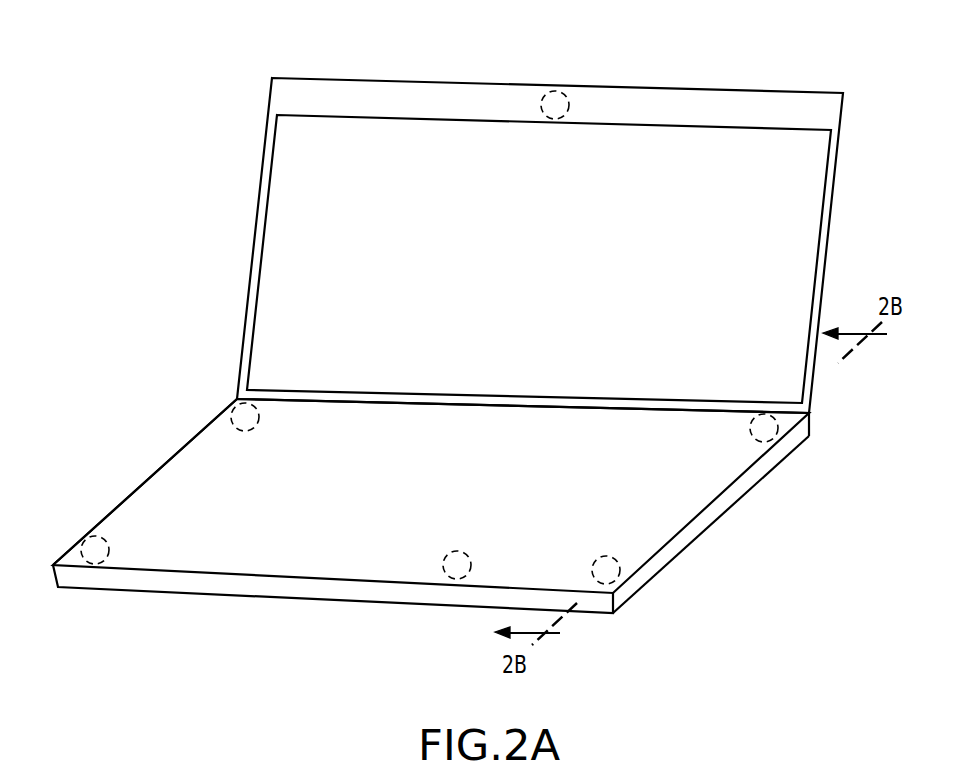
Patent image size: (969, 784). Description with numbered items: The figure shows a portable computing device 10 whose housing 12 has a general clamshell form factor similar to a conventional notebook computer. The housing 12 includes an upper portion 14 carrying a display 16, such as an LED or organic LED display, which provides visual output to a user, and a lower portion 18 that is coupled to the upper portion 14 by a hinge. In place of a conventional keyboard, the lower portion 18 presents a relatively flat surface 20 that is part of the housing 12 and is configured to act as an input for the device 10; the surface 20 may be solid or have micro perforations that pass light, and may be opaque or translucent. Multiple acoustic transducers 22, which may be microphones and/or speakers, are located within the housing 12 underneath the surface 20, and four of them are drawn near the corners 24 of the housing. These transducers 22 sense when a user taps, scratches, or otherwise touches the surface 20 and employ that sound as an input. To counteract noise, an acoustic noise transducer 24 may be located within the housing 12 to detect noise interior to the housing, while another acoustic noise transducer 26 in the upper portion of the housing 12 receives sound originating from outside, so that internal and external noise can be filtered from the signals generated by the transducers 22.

The portable computing device 10 is at (180, 82).
The housing 12 is at (147, 486).
The upper portion 14 is at (832, 155).
The display 16 is at (812, 247).
The lower portion 18 is at (197, 432).
The surface 20 is at (443, 478).
The acoustic transducers 22 is at (775, 432).
The acoustic noise transducer 24 is at (457, 549).
The acoustic noise transducer 26 is at (555, 91).